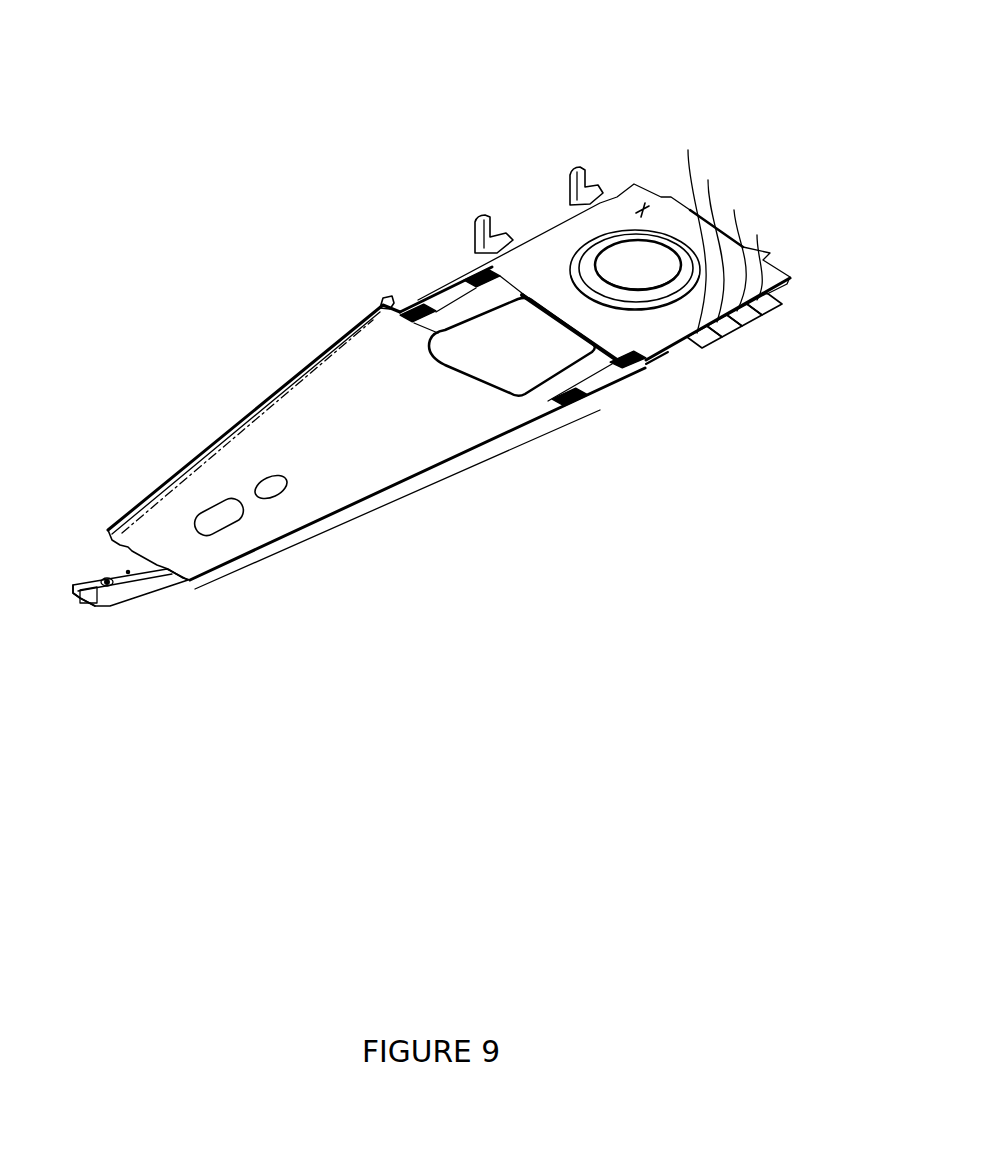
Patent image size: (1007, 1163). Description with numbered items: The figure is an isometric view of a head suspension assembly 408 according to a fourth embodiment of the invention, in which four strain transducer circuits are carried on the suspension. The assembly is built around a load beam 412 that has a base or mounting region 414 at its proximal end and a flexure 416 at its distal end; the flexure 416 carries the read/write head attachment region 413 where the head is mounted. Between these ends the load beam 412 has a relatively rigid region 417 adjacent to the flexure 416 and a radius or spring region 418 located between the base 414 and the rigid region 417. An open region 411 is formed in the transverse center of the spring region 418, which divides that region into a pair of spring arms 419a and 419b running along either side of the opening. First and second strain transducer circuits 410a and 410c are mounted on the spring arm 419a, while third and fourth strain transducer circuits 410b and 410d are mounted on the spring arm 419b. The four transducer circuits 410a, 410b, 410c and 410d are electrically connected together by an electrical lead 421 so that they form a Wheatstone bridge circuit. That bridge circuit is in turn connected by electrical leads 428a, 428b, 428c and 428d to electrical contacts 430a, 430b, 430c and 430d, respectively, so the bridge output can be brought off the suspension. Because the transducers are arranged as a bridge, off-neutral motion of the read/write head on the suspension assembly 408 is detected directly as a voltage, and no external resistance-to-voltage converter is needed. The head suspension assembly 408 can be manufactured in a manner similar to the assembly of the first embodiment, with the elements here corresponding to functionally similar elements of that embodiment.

The head suspension assembly 408 is at (547, 673).
The first strain transducer circuit 410a is at (497, 292).
The third strain transducer circuit 410b is at (626, 364).
The second strain transducer circuit 410c is at (412, 324).
The fourth strain transducer circuit 410d is at (576, 410).
The open region 411 is at (470, 362).
The load beam 412 is at (183, 150).
The read/write head attachment region 413 is at (77, 602).
The base or mounting region 414 is at (618, 195).
The flexure 416 is at (133, 606).
The rigid region 417 is at (333, 516).
The spring region 418 is at (448, 291).
The spring arm 419a is at (420, 296).
The spring arm 419b is at (667, 357).
The electrical lead 421 is at (527, 292).
The electrical lead 428a is at (757, 235).
The electrical lead 428b is at (734, 210).
The electrical lead 428c is at (708, 180).
The electrical lead 428d is at (688, 150).
The electrical contact 430a is at (778, 312).
The electrical contact 430b is at (755, 325).
The electrical contact 430c is at (738, 338).
The electrical contact 430d is at (712, 348).